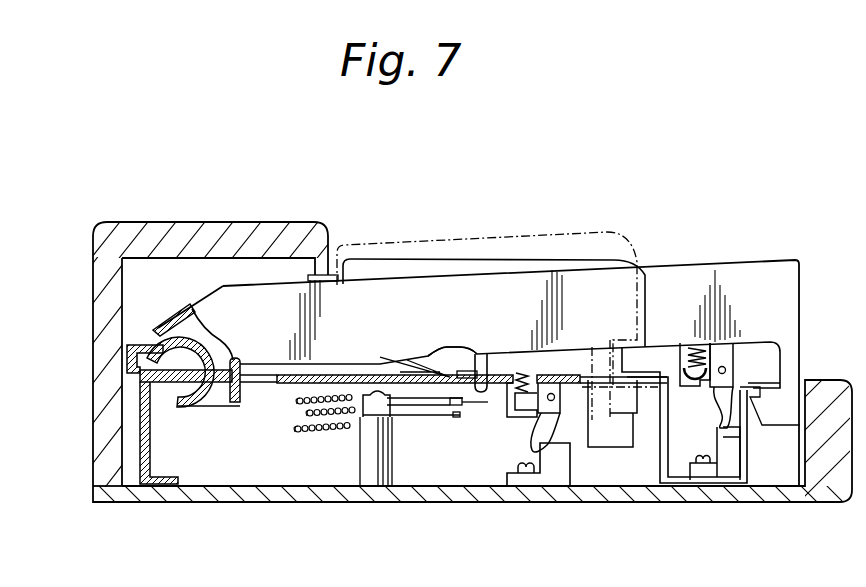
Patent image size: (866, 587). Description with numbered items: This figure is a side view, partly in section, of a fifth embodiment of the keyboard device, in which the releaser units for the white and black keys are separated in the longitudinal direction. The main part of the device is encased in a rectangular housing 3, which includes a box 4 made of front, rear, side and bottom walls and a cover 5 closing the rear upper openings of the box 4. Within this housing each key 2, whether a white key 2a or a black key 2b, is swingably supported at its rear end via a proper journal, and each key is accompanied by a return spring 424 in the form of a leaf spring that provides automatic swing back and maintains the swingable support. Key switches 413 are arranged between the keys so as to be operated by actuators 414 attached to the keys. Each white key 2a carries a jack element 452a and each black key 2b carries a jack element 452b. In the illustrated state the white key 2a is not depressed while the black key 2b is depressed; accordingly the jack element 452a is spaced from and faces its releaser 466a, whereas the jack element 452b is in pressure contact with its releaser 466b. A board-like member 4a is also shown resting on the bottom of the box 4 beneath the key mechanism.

The key 2 is at (649, 250).
The white key 2a is at (272, 296).
The black key 2b is at (492, 268).
The housing 3 is at (90, 417).
The box 4 is at (143, 494).
The circuit board 4a is at (290, 384).
The cover 5 is at (190, 236).
The key switch 413 is at (422, 413).
The actuator 414 is at (492, 353).
The return spring 424 is at (441, 348).
The jack element 452a is at (717, 414).
The jack element 452b is at (540, 438).
The releaser 466a is at (742, 455).
The releaser 466b is at (562, 447).